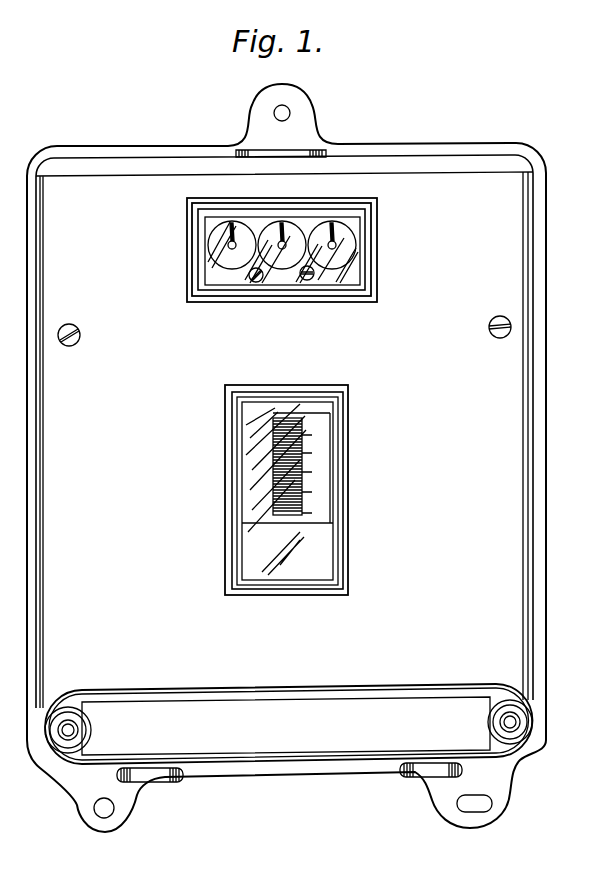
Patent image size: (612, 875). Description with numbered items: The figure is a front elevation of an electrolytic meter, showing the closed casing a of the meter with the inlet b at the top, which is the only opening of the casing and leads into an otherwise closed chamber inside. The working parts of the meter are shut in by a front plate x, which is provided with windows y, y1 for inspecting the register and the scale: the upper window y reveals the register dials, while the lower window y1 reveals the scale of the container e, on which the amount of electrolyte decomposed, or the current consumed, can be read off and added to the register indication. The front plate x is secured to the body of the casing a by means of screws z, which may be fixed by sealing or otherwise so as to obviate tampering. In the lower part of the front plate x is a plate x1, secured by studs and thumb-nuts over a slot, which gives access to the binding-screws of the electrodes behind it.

The casing a is at (543, 447).
The inlet b is at (312, 147).
The container e is at (285, 408).
The front plate x is at (284, 440).
The plate x1 is at (289, 724).
The windows y is at (353, 270).
The windows y1 is at (337, 477).
The screws z is at (80, 338).